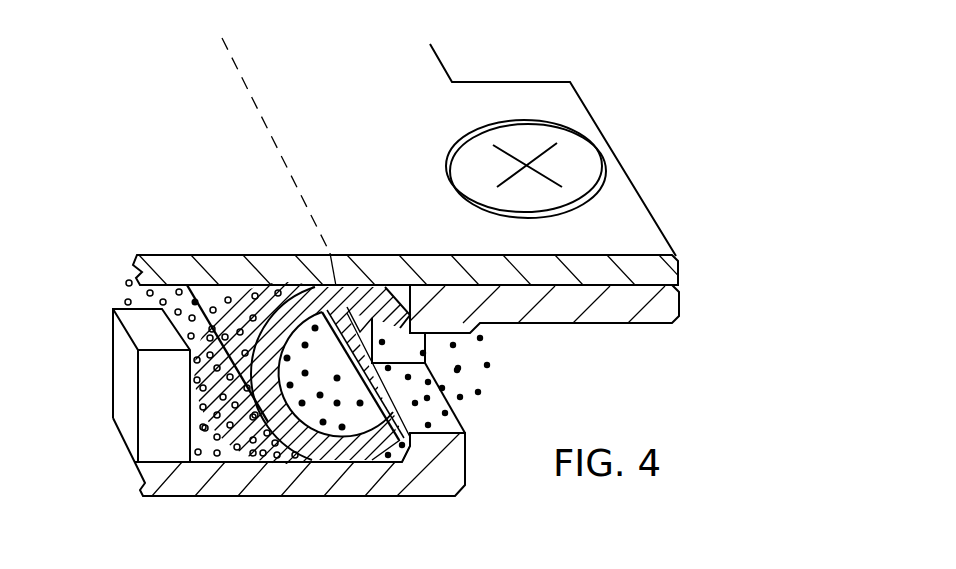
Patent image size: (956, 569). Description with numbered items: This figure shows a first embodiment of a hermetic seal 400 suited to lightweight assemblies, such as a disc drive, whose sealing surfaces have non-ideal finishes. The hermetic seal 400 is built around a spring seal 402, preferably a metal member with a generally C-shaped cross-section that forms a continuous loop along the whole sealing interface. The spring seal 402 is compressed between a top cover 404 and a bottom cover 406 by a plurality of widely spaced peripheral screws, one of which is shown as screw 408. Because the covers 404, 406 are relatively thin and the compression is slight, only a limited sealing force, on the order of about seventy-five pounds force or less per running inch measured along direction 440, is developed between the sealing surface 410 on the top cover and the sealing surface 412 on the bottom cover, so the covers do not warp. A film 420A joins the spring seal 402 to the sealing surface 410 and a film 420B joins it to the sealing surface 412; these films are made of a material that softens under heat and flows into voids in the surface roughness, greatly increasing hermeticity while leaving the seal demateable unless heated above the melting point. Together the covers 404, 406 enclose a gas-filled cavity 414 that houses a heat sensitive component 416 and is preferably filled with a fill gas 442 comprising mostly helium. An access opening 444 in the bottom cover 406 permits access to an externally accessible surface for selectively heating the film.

The hermetic seal 400 is at (573, 367).
The spring seal 402 is at (263, 337).
The top cover 404 is at (440, 52).
The bottom cover 406 is at (463, 488).
The screw 408 is at (580, 135).
The sealing surface 410 is at (323, 285).
The sealing surface 412 is at (346, 462).
The gas-filled cavity 414 is at (205, 443).
The heat sensitive component 416 is at (112, 387).
The film 420A is at (298, 286).
The film 420B is at (320, 463).
The direction 440 is at (233, 58).
The fill gas 442 is at (128, 303).
The access opening 444 is at (453, 423).